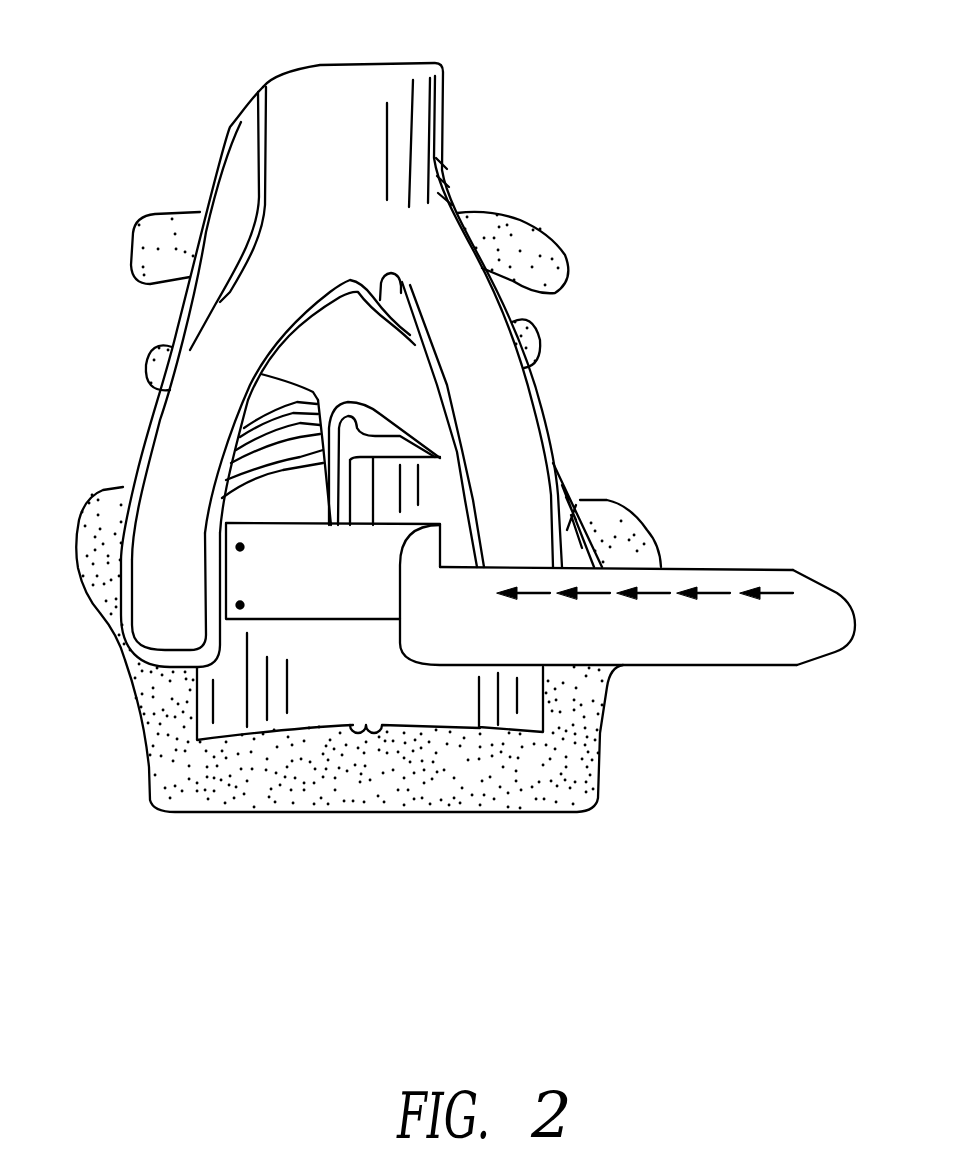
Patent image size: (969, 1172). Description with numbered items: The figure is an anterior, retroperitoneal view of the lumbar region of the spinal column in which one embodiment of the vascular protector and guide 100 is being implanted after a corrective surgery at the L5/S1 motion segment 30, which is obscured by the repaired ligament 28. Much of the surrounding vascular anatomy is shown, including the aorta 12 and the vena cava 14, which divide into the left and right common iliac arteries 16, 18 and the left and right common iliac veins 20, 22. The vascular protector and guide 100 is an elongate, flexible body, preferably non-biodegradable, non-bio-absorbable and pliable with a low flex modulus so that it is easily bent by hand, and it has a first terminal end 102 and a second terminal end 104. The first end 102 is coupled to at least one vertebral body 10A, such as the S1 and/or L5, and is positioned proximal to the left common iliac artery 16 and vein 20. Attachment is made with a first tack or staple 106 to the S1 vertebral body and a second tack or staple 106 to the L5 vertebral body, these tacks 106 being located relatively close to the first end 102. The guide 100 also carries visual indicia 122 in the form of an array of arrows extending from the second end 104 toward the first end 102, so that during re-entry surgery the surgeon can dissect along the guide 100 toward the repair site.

The vertebral body 10A is at (95, 525).
The aorta 12 is at (385, 80).
The vena cava 14 is at (240, 160).
The left common iliac artery 16 is at (147, 622).
The right common iliac artery 18 is at (515, 480).
The left common iliac vein 20 is at (183, 660).
The right common iliac vein 22 is at (580, 500).
The ligament 28 is at (292, 707).
The L5/S1 motion segment 30 is at (437, 485).
The vascular protector and guide 100 is at (680, 643).
The first terminal end 102 is at (223, 515).
The second terminal end 104 is at (803, 572).
The tack or staple 106 is at (243, 549).
The visual indicia 122 is at (713, 595).